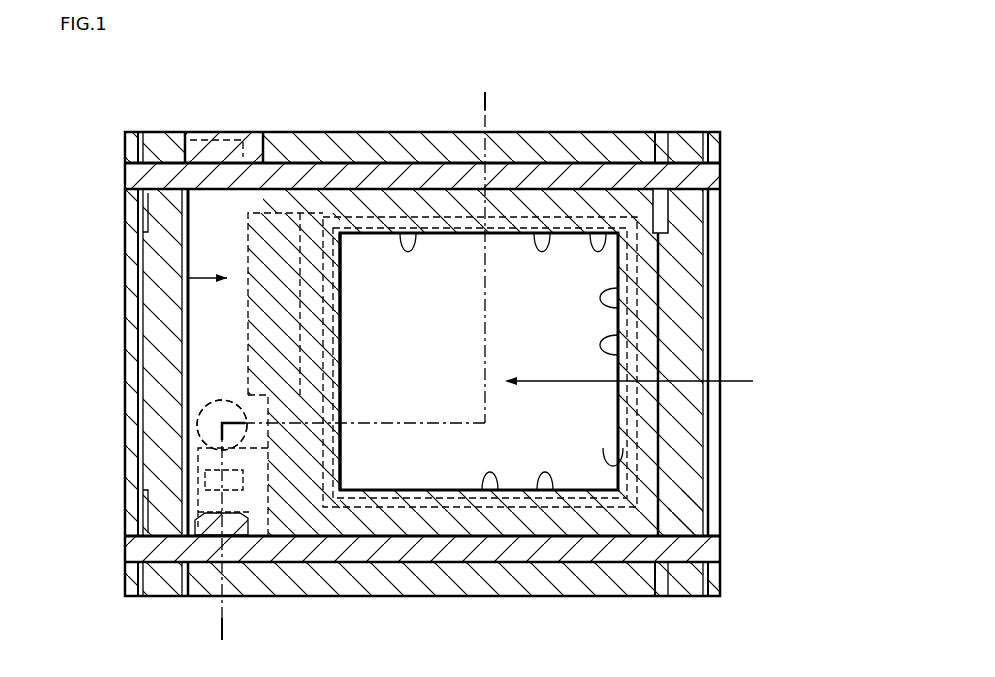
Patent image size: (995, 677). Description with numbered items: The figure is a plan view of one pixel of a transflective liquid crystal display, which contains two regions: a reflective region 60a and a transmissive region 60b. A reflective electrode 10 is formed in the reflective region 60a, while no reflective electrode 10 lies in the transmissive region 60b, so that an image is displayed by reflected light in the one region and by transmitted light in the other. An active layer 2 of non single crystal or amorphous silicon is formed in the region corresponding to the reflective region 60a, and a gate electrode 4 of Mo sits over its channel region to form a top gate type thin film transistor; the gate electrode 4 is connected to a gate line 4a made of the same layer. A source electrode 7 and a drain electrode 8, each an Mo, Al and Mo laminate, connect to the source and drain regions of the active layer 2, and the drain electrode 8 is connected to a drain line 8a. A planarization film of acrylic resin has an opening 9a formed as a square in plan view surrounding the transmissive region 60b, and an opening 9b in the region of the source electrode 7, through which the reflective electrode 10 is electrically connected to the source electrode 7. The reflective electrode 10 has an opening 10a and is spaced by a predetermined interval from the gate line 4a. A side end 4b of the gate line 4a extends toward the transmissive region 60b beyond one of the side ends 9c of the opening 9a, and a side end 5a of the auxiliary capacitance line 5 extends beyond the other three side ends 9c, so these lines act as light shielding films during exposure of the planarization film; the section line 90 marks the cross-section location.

The active layer 2 is at (205, 452).
The gate electrode 4 is at (722, 481).
The gate line 4a is at (690, 218).
The side end of the gate line 4b is at (605, 300).
The auxiliary capacitance line 5 is at (283, 240).
The side end of the auxiliary capacitance line 5a is at (418, 233).
The source electrode 7 is at (200, 437).
The opening 9b is at (222, 425).
The drain electrode 8 is at (215, 547).
The drain line 8a is at (137, 179).
The opening 9a is at (549, 232).
The side ends of the opening 9c is at (603, 232).
The reflective electrode 10 is at (188, 342).
The opening of the reflective electrode 10a is at (607, 462).
The reflective region 60a is at (188, 278).
The transmissive region 60b is at (645, 381).
The section line 90 is at (487, 100).